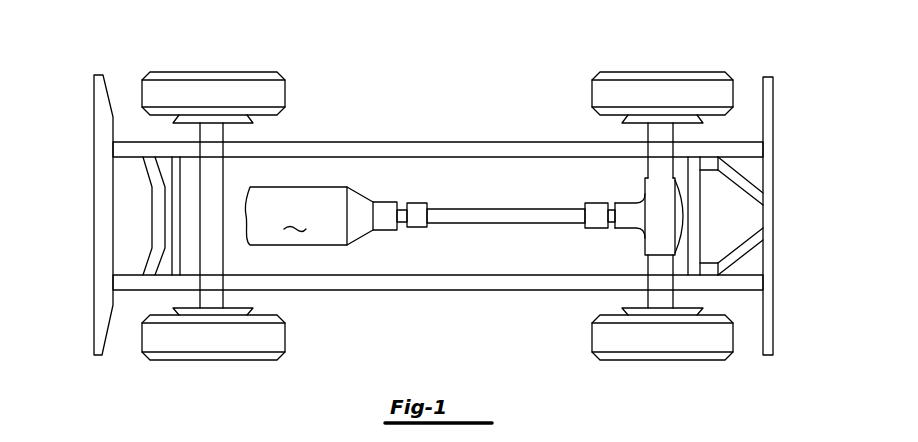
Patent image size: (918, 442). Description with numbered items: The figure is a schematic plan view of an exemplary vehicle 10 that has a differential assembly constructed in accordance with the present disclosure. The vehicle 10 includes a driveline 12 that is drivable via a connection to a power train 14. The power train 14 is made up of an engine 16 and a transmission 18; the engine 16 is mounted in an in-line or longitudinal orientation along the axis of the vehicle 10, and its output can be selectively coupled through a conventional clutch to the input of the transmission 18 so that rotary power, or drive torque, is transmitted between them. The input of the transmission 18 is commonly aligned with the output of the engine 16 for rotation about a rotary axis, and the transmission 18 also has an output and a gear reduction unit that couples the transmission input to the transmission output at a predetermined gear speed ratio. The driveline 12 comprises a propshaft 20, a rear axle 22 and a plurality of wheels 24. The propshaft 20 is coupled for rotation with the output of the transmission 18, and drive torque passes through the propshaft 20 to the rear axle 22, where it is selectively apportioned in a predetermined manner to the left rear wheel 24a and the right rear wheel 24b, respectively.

The vehicle 10 is at (387, 80).
The driveline 12 is at (605, 190).
The power train 14 is at (321, 243).
The engine 16 is at (296, 216).
The transmission 18 is at (388, 204).
The propshaft 20 is at (522, 210).
The rear axle 22 is at (630, 243).
The wheels 24 is at (485, 189).
The left rear wheel 24a is at (592, 332).
The right rear wheel 24b is at (592, 82).